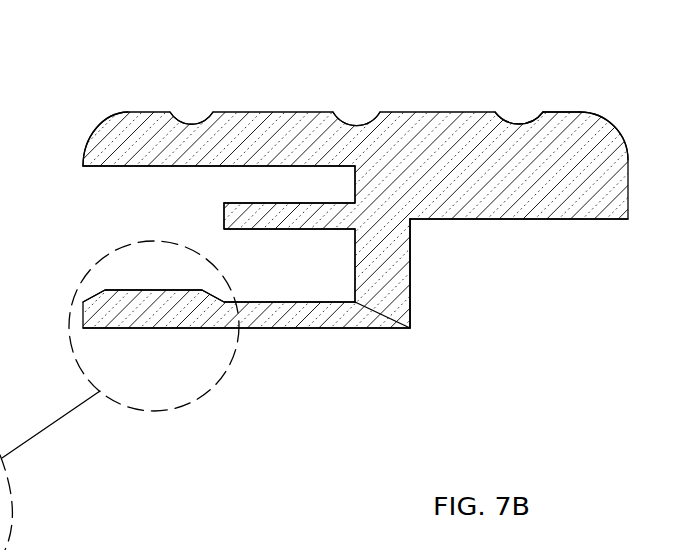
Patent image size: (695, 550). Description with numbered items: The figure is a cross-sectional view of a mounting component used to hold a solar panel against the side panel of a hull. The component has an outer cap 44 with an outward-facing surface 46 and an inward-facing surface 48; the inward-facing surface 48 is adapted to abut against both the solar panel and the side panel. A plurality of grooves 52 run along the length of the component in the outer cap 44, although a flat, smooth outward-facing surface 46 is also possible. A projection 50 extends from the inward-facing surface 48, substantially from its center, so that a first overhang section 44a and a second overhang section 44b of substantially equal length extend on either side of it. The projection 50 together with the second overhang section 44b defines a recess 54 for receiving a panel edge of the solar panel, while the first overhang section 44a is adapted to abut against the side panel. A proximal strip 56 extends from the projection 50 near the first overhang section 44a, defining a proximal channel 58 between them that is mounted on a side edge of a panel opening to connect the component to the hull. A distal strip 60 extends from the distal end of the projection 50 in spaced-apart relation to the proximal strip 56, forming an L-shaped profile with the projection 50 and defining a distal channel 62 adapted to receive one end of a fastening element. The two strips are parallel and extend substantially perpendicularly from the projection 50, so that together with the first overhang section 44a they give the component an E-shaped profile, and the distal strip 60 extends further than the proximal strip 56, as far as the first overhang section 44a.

The outer cap 44 is at (128, 118).
The first overhang section 44a is at (102, 140).
The second overhang section 44b is at (600, 133).
The outward-facing surface 46 is at (558, 100).
The inward-facing surface 48 is at (107, 172).
The grooves 52 is at (190, 110).
The proximal channel 58 is at (268, 182).
The distal channel 62 is at (265, 255).
The distal strip 60 is at (272, 315).
The proximal strip 56 is at (320, 216).
The projection 50 is at (388, 276).
The recess 54 is at (473, 278).